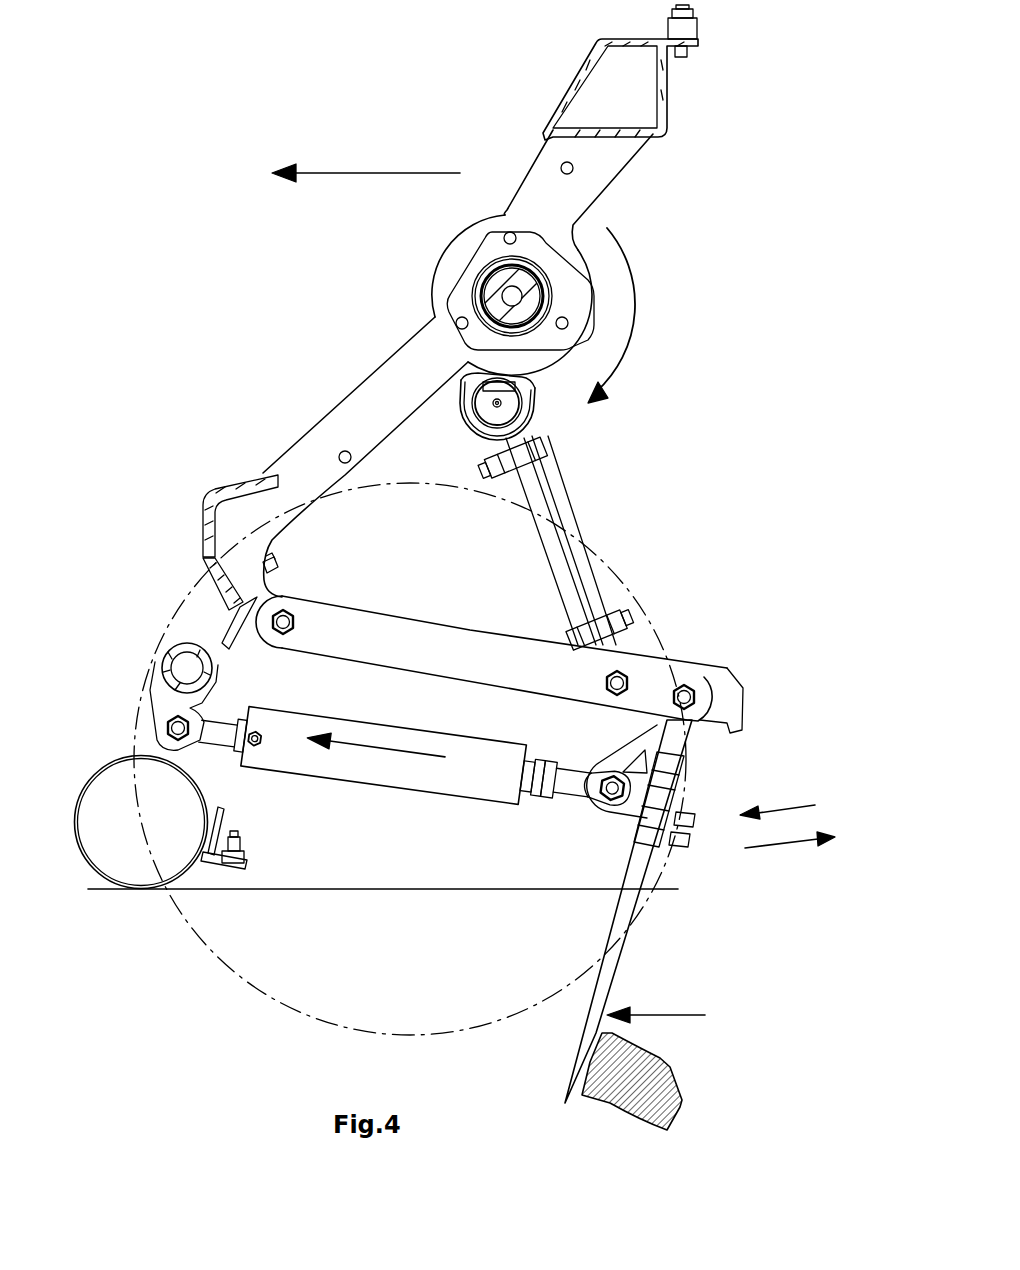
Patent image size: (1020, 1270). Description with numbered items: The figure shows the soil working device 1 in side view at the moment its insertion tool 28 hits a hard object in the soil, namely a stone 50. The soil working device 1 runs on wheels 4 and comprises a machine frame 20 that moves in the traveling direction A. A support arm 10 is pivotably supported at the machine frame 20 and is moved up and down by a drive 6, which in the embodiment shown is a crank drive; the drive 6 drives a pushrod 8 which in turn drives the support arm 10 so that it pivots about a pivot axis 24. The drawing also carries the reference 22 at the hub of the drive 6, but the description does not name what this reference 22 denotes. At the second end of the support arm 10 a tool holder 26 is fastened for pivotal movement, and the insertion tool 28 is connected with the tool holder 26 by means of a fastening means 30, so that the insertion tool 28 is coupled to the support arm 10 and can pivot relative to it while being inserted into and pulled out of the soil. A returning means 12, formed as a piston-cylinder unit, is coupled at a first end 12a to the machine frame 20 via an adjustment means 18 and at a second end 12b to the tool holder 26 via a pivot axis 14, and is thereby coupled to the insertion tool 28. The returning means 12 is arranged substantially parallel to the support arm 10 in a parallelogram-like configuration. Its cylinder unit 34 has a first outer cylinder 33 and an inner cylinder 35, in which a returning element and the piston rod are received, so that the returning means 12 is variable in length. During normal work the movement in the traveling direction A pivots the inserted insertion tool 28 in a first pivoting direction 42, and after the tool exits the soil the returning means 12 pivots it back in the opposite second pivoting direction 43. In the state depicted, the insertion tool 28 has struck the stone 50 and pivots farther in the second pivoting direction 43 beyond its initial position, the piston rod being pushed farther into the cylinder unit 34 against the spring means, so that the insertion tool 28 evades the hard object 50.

The soil working device 1 is at (172, 219).
The traveling direction A is at (331, 173).
The wheels 4 is at (112, 766).
The drive 6 is at (600, 311).
The pushrod 8 is at (540, 507).
The support arm 10 is at (375, 652).
The returning means 12 is at (305, 781).
The first end 12a is at (224, 763).
The second end 12b is at (548, 806).
The pivot axis 14 is at (613, 800).
The adjustment means 18 is at (147, 705).
The machine frame 20 is at (663, 110).
The pivot axis 22 is at (512, 296).
The pivot axis 24 is at (685, 690).
The tool holder 26 is at (662, 773).
The insertion tool 28 is at (612, 983).
The fastening means 30 is at (693, 820).
The first outer cylinder 33 is at (430, 780).
The cylinder unit 34 is at (393, 795).
The inner cylinder 35 is at (507, 843).
The first pivoting direction 42 is at (772, 843).
The second pivoting direction 43 is at (790, 797).
The stone 50 is at (643, 1073).